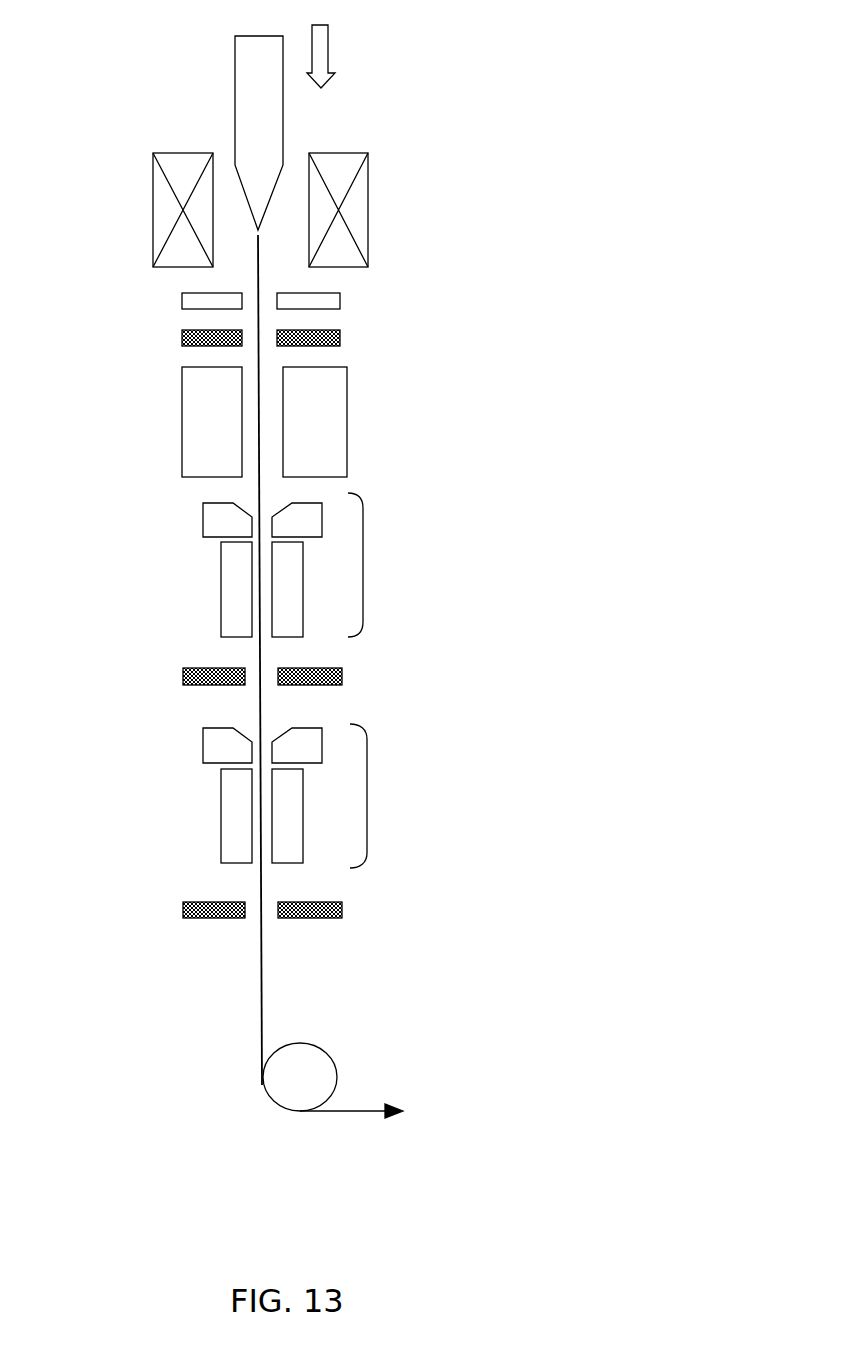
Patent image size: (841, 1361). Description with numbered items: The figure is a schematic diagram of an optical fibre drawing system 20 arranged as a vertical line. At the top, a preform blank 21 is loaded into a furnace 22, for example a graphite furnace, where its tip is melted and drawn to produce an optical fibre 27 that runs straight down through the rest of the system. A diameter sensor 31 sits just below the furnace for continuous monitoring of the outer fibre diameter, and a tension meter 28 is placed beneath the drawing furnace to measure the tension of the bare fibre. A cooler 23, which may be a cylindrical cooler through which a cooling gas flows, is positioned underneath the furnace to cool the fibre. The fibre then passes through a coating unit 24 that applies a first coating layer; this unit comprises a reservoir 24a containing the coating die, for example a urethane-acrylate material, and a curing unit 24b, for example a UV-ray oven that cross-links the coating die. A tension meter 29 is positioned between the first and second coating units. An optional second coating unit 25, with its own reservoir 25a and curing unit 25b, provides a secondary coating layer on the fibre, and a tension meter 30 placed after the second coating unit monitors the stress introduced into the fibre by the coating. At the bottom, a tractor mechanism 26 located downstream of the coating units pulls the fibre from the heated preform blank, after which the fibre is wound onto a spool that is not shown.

The optical fibre drawing system 20 is at (455, 87).
The preform blank 21 is at (263, 132).
The furnace 22 is at (355, 228).
The cooler 23 is at (347, 412).
The coating unit 24 is at (304, 565).
The reservoir 24a is at (215, 521).
The curing unit 24b is at (228, 587).
The second coating unit 25 is at (310, 796).
The reservoir 25a is at (215, 747).
The curing unit 25b is at (228, 812).
The tractor mechanism 26 is at (262, 1087).
The optical fibre 27 is at (258, 268).
The tension meter 28 is at (340, 338).
The tension meter 29 is at (345, 675).
The tension meter 30 is at (345, 910).
The diameter sensor 31 is at (340, 294).